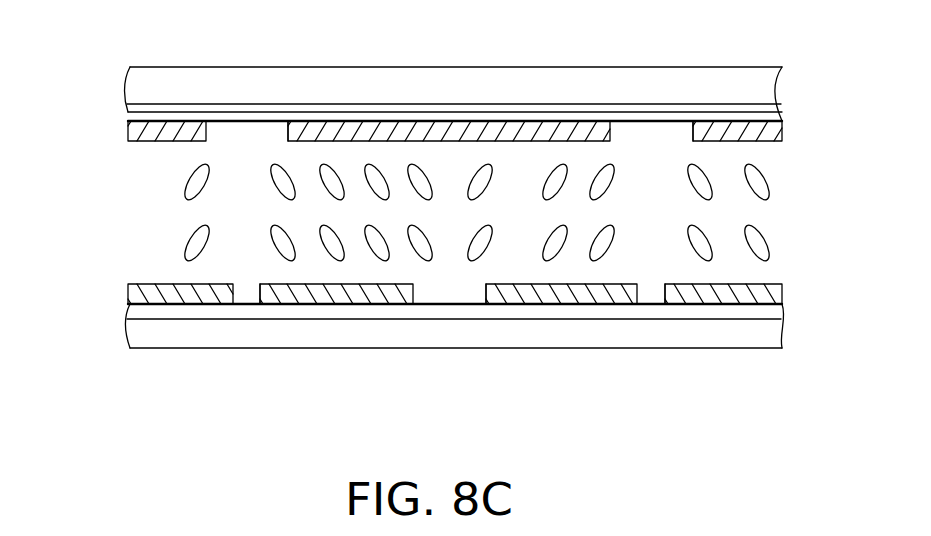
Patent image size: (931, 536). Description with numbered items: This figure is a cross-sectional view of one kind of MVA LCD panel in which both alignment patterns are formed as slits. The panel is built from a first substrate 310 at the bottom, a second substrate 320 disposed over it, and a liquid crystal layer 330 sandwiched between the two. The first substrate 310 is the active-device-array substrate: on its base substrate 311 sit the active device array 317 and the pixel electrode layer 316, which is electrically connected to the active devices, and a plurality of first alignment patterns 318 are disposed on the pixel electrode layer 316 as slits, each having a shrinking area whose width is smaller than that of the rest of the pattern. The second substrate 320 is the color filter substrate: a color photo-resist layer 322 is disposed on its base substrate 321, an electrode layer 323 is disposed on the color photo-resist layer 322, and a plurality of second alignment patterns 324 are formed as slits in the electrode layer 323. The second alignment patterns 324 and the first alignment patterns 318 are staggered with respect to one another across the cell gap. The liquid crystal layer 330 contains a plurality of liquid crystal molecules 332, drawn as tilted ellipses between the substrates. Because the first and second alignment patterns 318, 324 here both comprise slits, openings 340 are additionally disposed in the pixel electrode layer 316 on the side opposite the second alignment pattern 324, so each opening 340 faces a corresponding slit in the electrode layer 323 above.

The first substrate 310 is at (808, 285).
The substrate 311 is at (130, 342).
The pixel electrode layer 316 is at (130, 296).
The active device array 317 is at (130, 312).
The first alignment pattern 318 is at (476, 290).
The second substrate 320 is at (808, 68).
The substrate 321 is at (133, 85).
The color photo-resist layer 322 is at (132, 111).
The electrode layer 323 is at (128, 130).
The second alignment pattern 324 is at (277, 130).
The liquid crystal layer 330 is at (808, 146).
The liquid crystal molecules 332 is at (190, 238).
The openings 340 is at (248, 291).